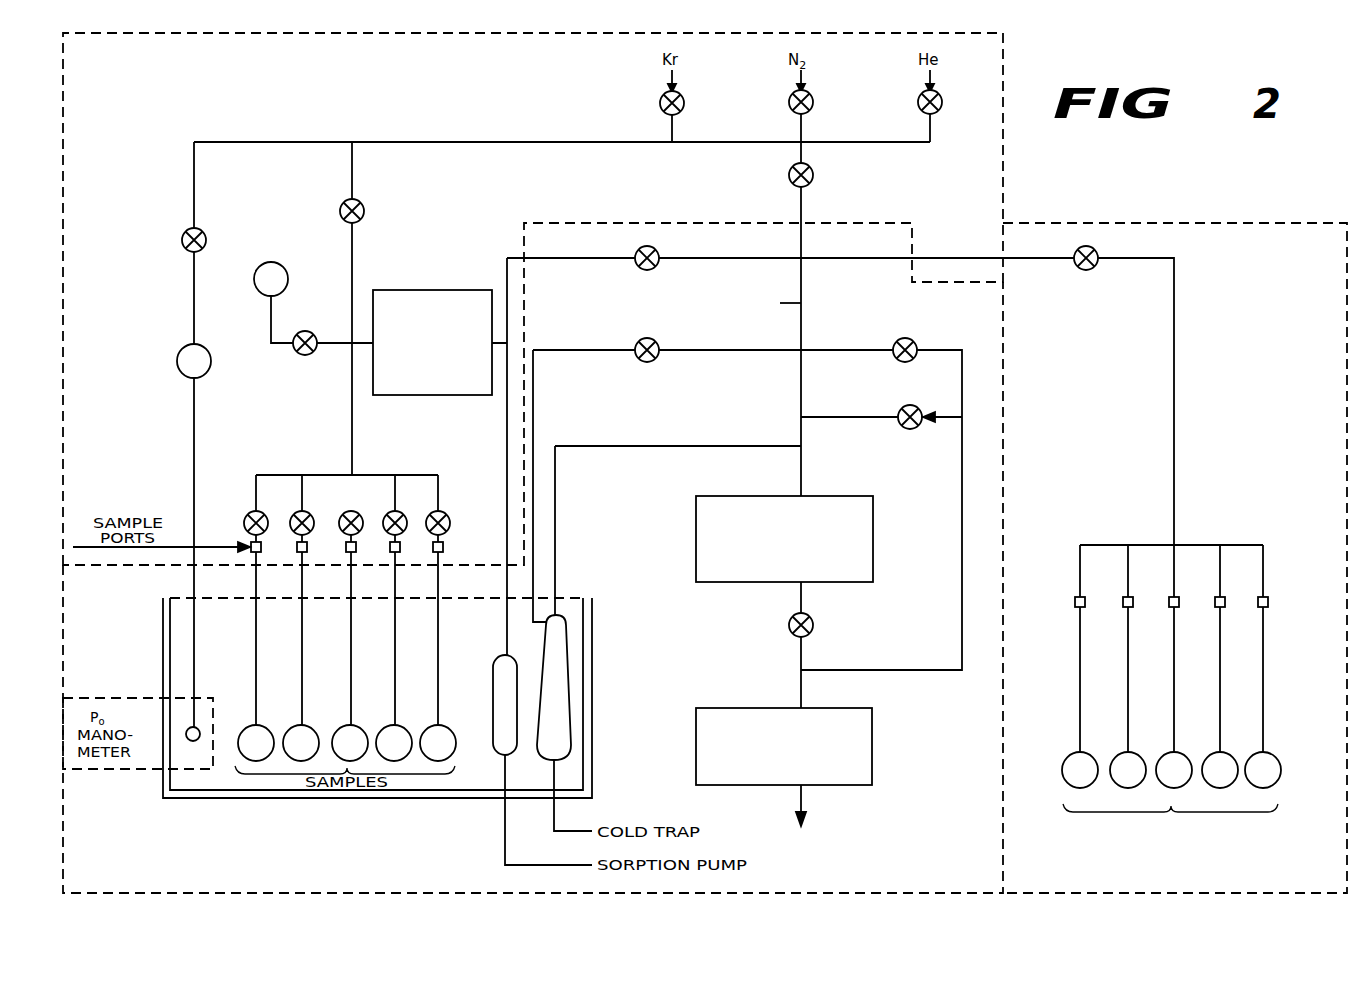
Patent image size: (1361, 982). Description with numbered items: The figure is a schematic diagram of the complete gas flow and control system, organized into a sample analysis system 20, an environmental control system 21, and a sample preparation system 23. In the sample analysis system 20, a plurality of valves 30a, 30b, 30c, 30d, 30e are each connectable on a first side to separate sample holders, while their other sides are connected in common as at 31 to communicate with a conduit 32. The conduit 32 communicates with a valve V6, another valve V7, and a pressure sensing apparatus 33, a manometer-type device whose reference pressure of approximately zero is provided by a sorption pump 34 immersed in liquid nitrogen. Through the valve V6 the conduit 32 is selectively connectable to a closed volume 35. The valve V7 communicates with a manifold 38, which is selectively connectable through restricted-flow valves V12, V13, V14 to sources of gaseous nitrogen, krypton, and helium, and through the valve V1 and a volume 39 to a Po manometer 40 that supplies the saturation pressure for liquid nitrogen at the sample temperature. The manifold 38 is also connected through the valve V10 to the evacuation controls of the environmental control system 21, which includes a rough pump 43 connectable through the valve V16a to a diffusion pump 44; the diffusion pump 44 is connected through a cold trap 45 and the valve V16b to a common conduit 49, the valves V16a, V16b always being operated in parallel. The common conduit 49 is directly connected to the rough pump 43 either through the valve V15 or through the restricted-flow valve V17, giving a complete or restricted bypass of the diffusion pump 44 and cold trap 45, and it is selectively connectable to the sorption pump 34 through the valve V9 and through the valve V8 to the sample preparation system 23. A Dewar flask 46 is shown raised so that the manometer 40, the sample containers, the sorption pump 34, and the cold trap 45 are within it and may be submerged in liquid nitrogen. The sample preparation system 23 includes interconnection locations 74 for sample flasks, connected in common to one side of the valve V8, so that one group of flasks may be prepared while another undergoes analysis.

The sample analysis system 20 is at (170, 110).
The environmental control system 21 is at (295, 884).
The sample preparation system 23 is at (1282, 315).
The valve 30a is at (247, 515).
The valve 30b is at (293, 515).
The valve 30c is at (342, 515).
The valve 30d is at (386, 515).
The valve 30e is at (430, 515).
The common connection 31 is at (350, 474).
The conduit 32 is at (350, 402).
The pressure sensing apparatus 33 is at (423, 290).
The sorption pump 34 is at (493, 682).
The closed volume 35 is at (268, 262).
The manifold 38 is at (443, 140).
The volume 39 is at (178, 366).
The Po manometer 40 is at (200, 740).
The rough pump 43 is at (696, 726).
The diffusion pump 44 is at (696, 538).
The cold trap 45 is at (545, 665).
The Dewar flask 46 is at (422, 800).
The common conduit 49 is at (776, 305).
The interconnection locations 74 is at (1278, 618).
The valve V1 is at (182, 242).
The valve V6 is at (303, 357).
The valve V7 is at (342, 202).
The valve V8 is at (1096, 250).
The valve V9 is at (658, 252).
The valve V10 is at (815, 176).
The restricted-flow valve V12 is at (812, 108).
The restricted-flow valve V13 is at (683, 109).
The restricted-flow valve V14 is at (941, 108).
The valve V15 is at (898, 339).
The valve V16a is at (789, 628).
The valve V16b is at (656, 341).
The restricted-flow valve V17 is at (902, 406).